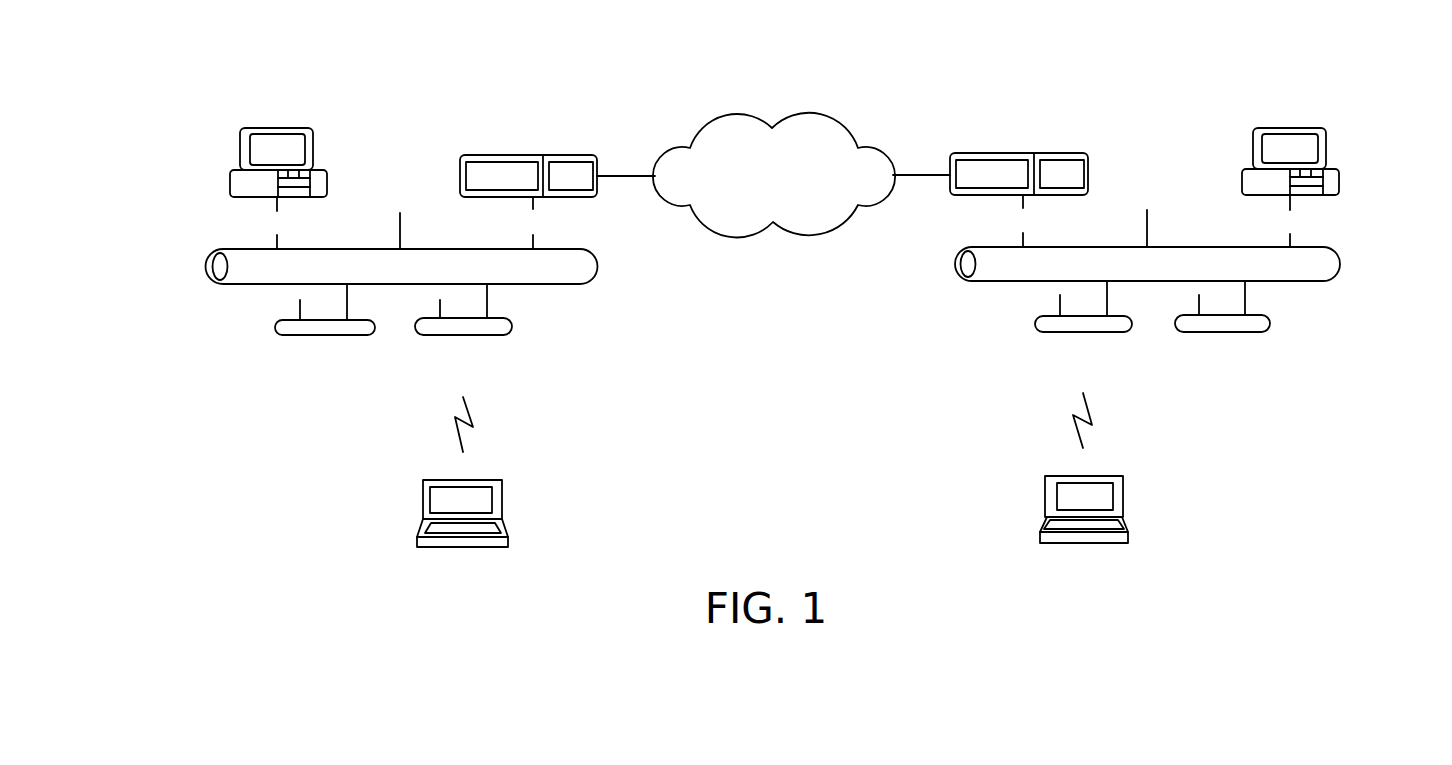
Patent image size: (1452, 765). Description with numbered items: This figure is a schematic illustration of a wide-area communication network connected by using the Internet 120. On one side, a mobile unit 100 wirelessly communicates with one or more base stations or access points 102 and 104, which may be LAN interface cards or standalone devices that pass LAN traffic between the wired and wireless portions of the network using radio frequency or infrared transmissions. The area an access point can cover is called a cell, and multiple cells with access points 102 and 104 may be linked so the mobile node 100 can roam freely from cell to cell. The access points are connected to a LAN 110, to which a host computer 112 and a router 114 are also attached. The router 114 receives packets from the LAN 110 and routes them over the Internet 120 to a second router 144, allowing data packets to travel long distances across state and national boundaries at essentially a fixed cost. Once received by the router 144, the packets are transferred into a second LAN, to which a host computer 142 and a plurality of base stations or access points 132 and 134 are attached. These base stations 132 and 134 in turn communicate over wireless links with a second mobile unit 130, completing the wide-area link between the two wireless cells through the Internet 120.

The mobile unit 100 is at (423, 499).
The access point 102 is at (275, 327).
The access point 104 is at (512, 325).
The LAN 110 is at (206, 265).
The host computer 112 is at (277, 128).
The router 114 is at (530, 155).
The Internet 120 is at (735, 117).
The second mobile unit 130 is at (1123, 493).
The access point 132 is at (1035, 323).
The access point 134 is at (1270, 323).
The host computer 142 is at (1290, 128).
The second router 144 is at (1020, 153).